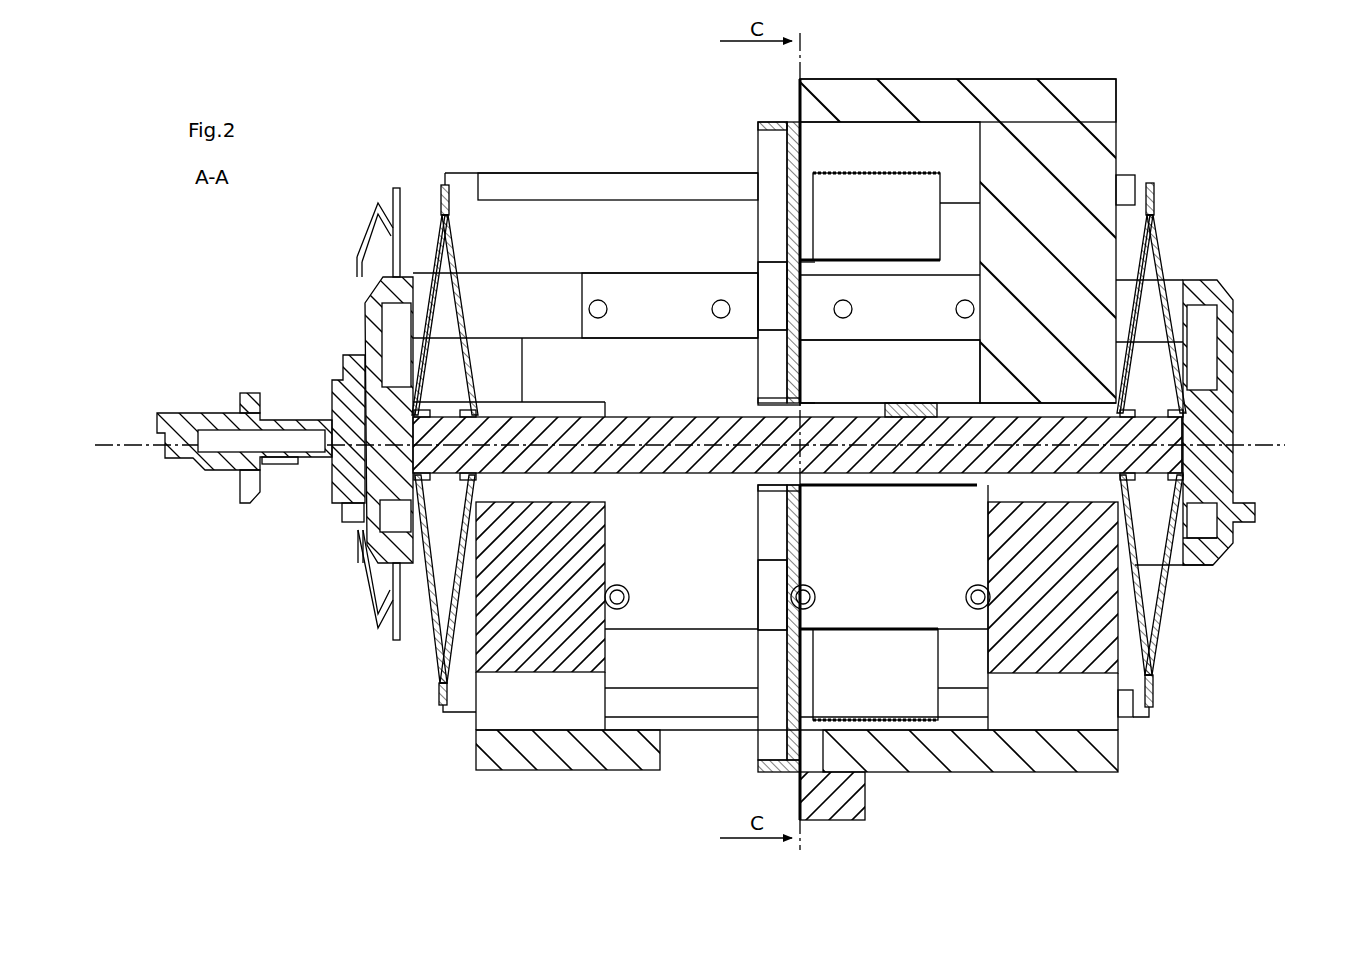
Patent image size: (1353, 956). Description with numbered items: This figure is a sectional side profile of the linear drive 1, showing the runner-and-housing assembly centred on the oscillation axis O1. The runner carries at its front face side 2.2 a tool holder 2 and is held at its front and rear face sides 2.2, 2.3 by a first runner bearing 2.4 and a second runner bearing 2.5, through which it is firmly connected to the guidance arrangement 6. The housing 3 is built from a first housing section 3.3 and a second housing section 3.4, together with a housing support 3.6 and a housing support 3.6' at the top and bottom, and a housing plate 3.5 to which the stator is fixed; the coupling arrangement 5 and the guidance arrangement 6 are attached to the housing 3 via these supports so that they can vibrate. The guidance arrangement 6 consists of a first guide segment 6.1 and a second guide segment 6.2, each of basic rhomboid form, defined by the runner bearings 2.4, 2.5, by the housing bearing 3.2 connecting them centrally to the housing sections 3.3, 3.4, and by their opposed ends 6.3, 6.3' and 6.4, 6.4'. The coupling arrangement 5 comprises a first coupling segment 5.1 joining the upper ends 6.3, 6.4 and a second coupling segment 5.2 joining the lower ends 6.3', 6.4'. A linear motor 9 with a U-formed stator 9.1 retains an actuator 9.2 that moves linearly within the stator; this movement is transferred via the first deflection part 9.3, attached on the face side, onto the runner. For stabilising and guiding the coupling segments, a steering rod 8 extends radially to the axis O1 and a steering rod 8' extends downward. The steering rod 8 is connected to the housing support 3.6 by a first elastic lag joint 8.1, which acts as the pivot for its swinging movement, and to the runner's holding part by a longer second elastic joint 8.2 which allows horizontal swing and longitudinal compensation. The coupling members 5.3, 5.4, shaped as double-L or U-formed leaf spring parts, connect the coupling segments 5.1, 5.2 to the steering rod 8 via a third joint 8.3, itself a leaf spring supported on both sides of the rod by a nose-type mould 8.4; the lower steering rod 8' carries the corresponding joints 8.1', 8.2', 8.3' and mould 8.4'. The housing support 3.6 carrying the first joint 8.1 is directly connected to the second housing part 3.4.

The linear drive 1 is at (343, 105).
The tool holder 2 is at (314, 398).
The front face side 2.2 is at (335, 440).
The rear face side 2.3 is at (1190, 445).
The first runner bearing 2.4 is at (340, 485).
The second runner bearing 2.5 is at (1190, 460).
The housing 3 is at (995, 478).
The housing bearing 3.2 is at (1112, 398).
The first housing section 3.3 is at (652, 478).
The second housing section 3.4 is at (949, 478).
The housing plate 3.5 is at (505, 757).
The housing support 3.6 is at (958, 78).
The housing support 3.6' is at (988, 478).
The coupling arrangement 5 is at (668, 170).
The first coupling segment 5.1 is at (567, 185).
The second coupling segment 5.2 is at (707, 712).
The coupling member 5.3 is at (890, 216).
The coupling member 5.4 is at (890, 607).
The guidance arrangement 6 is at (1177, 210).
The first guide segment 6.1 is at (462, 245).
The second guide segment 6.2 is at (1133, 250).
The upper end of first guide segment 6.3 is at (430, 274).
The lower end of first guide segment 6.3' is at (429, 609).
The upper end of second guide segment 6.4 is at (1152, 266).
The lower end of second guide segment 6.4' is at (1168, 620).
The steering rod 8 is at (754, 263).
The steering rod 8' is at (756, 652).
The first elastic lag joint 8.1 is at (752, 95).
The plate end 8.1' is at (761, 784).
The second elastic joint 8.2 is at (835, 377).
The plate section 8.2' is at (888, 509).
The third joint 8.3 is at (846, 290).
The plate section 8.3' is at (894, 609).
The nose-type mould 8.4 is at (725, 286).
The plate section 8.4' is at (745, 592).
The linear motor 9 is at (1228, 285).
The U-formed stator 9.1 is at (890, 371).
The actuator 9.2 is at (670, 305).
The first deflection part 9.3 is at (1233, 322).
The oscillation axis O1 is at (122, 442).